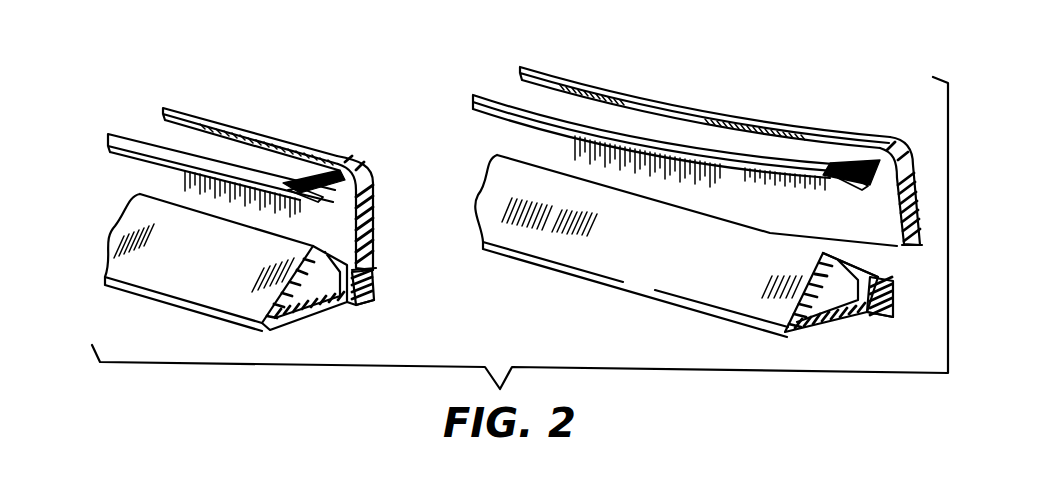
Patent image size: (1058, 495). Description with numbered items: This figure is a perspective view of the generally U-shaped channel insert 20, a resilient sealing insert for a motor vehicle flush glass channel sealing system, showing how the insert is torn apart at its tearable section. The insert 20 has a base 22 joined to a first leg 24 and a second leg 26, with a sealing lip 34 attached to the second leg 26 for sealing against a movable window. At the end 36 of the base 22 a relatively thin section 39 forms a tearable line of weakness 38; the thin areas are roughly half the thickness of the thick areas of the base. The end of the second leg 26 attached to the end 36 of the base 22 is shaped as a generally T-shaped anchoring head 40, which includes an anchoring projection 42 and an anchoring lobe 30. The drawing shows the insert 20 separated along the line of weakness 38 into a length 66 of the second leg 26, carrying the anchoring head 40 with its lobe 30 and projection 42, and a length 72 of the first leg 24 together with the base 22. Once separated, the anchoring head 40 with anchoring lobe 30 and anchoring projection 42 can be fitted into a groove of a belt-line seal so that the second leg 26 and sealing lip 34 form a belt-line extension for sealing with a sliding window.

The channel insert 20 is at (340, 122).
The base 22 is at (375, 208).
The first leg 24 is at (132, 135).
The second leg 26 is at (307, 310).
The anchoring lobe 30 is at (352, 306).
The sealing lip 34 is at (190, 287).
The end of the base 36 is at (918, 246).
The tearable line of weakness 38 is at (347, 262).
The thin section 39 is at (374, 264).
The anchoring head 40 is at (372, 288).
The anchoring projection 42 is at (858, 277).
The length of the second leg 66 is at (633, 303).
The length of the first leg and base 72 is at (675, 83).